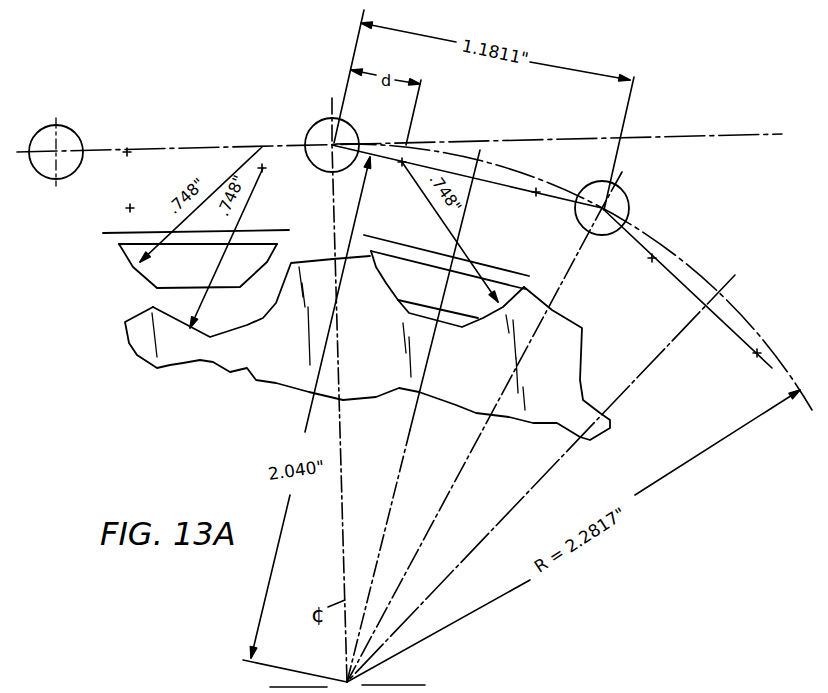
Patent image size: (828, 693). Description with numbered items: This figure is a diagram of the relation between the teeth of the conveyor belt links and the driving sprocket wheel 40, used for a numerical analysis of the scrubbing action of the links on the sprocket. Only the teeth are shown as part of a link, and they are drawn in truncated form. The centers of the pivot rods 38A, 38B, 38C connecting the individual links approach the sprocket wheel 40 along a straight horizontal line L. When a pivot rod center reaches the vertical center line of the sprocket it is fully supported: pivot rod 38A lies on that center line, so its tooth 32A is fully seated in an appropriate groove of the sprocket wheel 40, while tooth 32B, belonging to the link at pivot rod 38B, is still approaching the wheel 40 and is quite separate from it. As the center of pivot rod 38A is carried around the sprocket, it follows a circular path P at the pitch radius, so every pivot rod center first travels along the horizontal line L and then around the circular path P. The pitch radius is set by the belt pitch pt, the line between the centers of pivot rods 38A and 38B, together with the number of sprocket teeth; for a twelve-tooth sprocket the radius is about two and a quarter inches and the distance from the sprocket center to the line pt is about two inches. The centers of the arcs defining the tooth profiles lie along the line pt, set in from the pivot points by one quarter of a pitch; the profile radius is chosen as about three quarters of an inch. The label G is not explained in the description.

The pivot rod 38A is at (319, 127).
The pivot rod 38B is at (636, 208).
The pivot rod 38C is at (64, 133).
The tooth 32A is at (501, 290).
The tooth 32B is at (143, 276).
The driving sprocket wheel 40 is at (253, 370).
The horizontal line L is at (770, 137).
The circular path P is at (769, 345).
The line G is at (478, 447).
The pitch pt is at (506, 186).